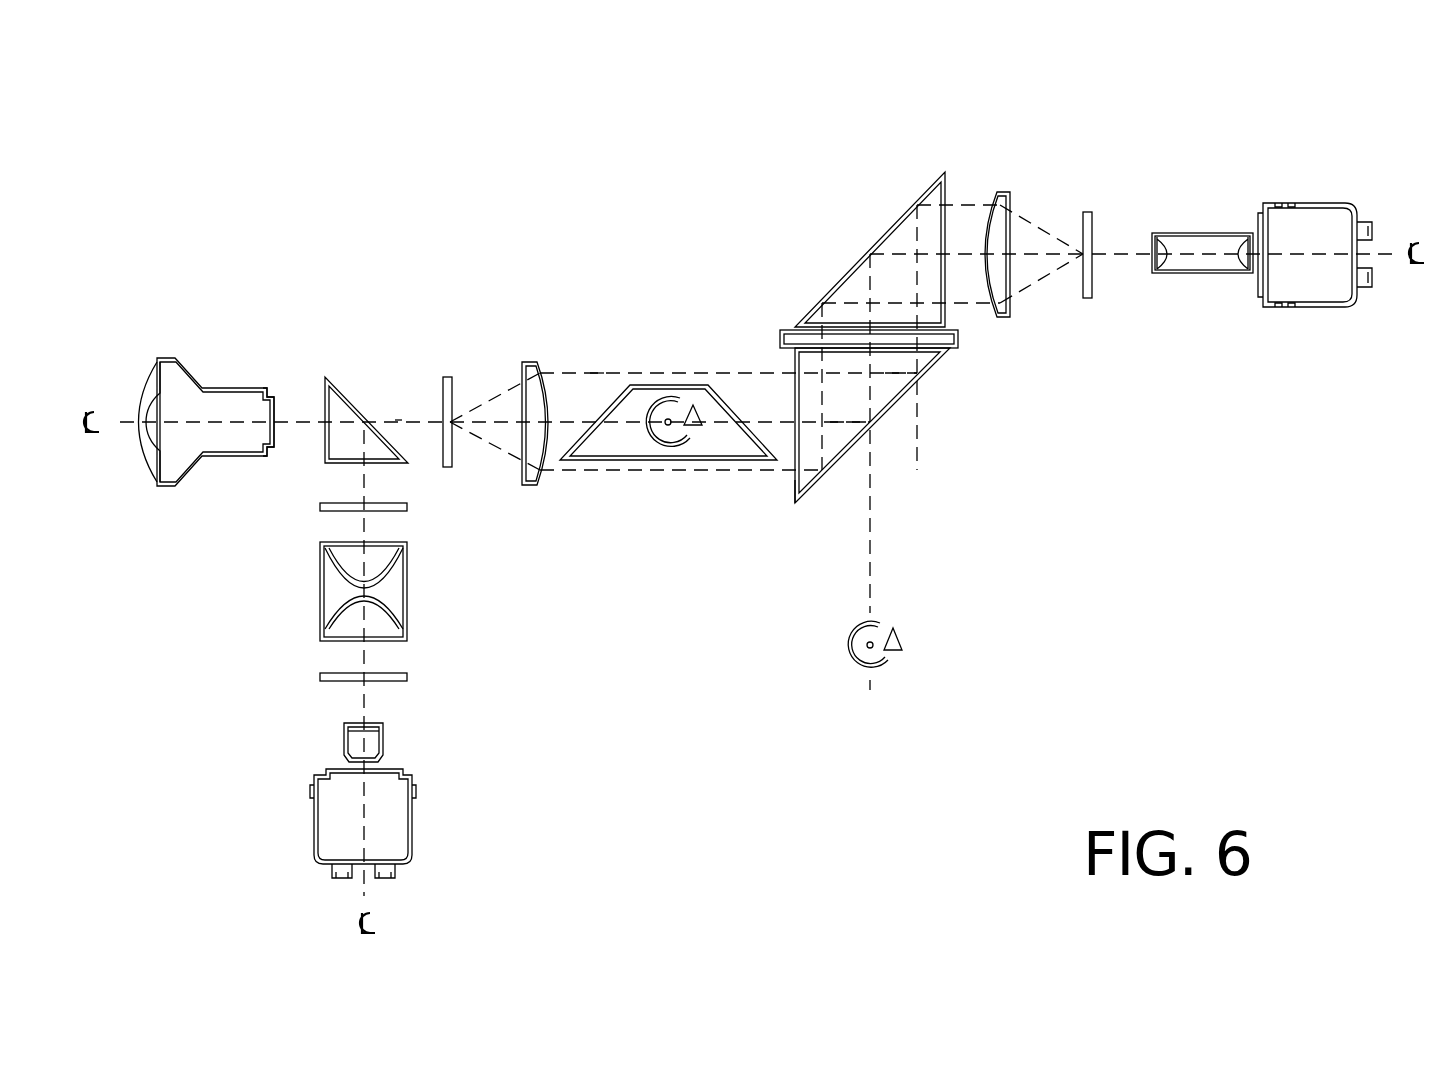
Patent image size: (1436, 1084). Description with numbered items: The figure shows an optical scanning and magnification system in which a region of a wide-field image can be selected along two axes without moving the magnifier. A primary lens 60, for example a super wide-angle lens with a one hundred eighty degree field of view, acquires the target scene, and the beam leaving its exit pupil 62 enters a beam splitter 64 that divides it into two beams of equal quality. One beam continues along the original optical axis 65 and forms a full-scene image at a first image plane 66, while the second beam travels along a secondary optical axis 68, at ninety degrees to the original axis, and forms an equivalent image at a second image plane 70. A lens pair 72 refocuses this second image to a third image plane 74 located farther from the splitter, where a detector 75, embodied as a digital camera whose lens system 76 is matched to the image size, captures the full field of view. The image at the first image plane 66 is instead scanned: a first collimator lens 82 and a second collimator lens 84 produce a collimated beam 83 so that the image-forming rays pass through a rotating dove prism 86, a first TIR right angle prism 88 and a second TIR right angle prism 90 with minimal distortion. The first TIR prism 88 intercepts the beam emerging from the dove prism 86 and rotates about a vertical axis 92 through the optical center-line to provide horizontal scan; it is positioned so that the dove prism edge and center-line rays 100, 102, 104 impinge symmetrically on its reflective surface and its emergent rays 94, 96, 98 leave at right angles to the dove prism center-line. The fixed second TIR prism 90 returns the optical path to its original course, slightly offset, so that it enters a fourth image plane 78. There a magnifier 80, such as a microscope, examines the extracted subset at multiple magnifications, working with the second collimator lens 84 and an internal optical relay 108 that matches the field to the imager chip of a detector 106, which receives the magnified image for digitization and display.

The primary lens 60 is at (158, 357).
The exit pupil 62 is at (276, 408).
The beam splitter 64 is at (340, 391).
The original optical axis 65 is at (398, 420).
The first image plane 66 is at (443, 397).
The secondary optical axis 68 is at (363, 490).
The second image plane 70 is at (345, 513).
The lens pair 72 is at (407, 590).
The third image plane 74 is at (337, 682).
The detector 75 is at (314, 838).
The lens system 76 is at (341, 742).
The fourth image plane 78 is at (1092, 220).
The magnifier 80 is at (1175, 233).
The first collimator lens 82 is at (527, 362).
The collimated beam 83 is at (600, 373).
The second collimator lens 84 is at (1013, 203).
The dove prism 86 is at (705, 460).
The first TIR right angle prism 88 is at (933, 363).
The second TIR right angle prism 90 is at (922, 197).
The vertical axis 92 is at (870, 690).
The emergent optical ray 94 is at (795, 327).
The emergent optical ray 96 is at (866, 280).
The emergent optical ray 98 is at (902, 240).
The dove prism ray bundle edge ray 100 is at (798, 487).
The dove prism center-line ray 102 is at (842, 425).
The dove prism ray bundle edge ray 104 is at (893, 375).
The detector 106 is at (1320, 203).
The internal optical relay 108 is at (1240, 237).